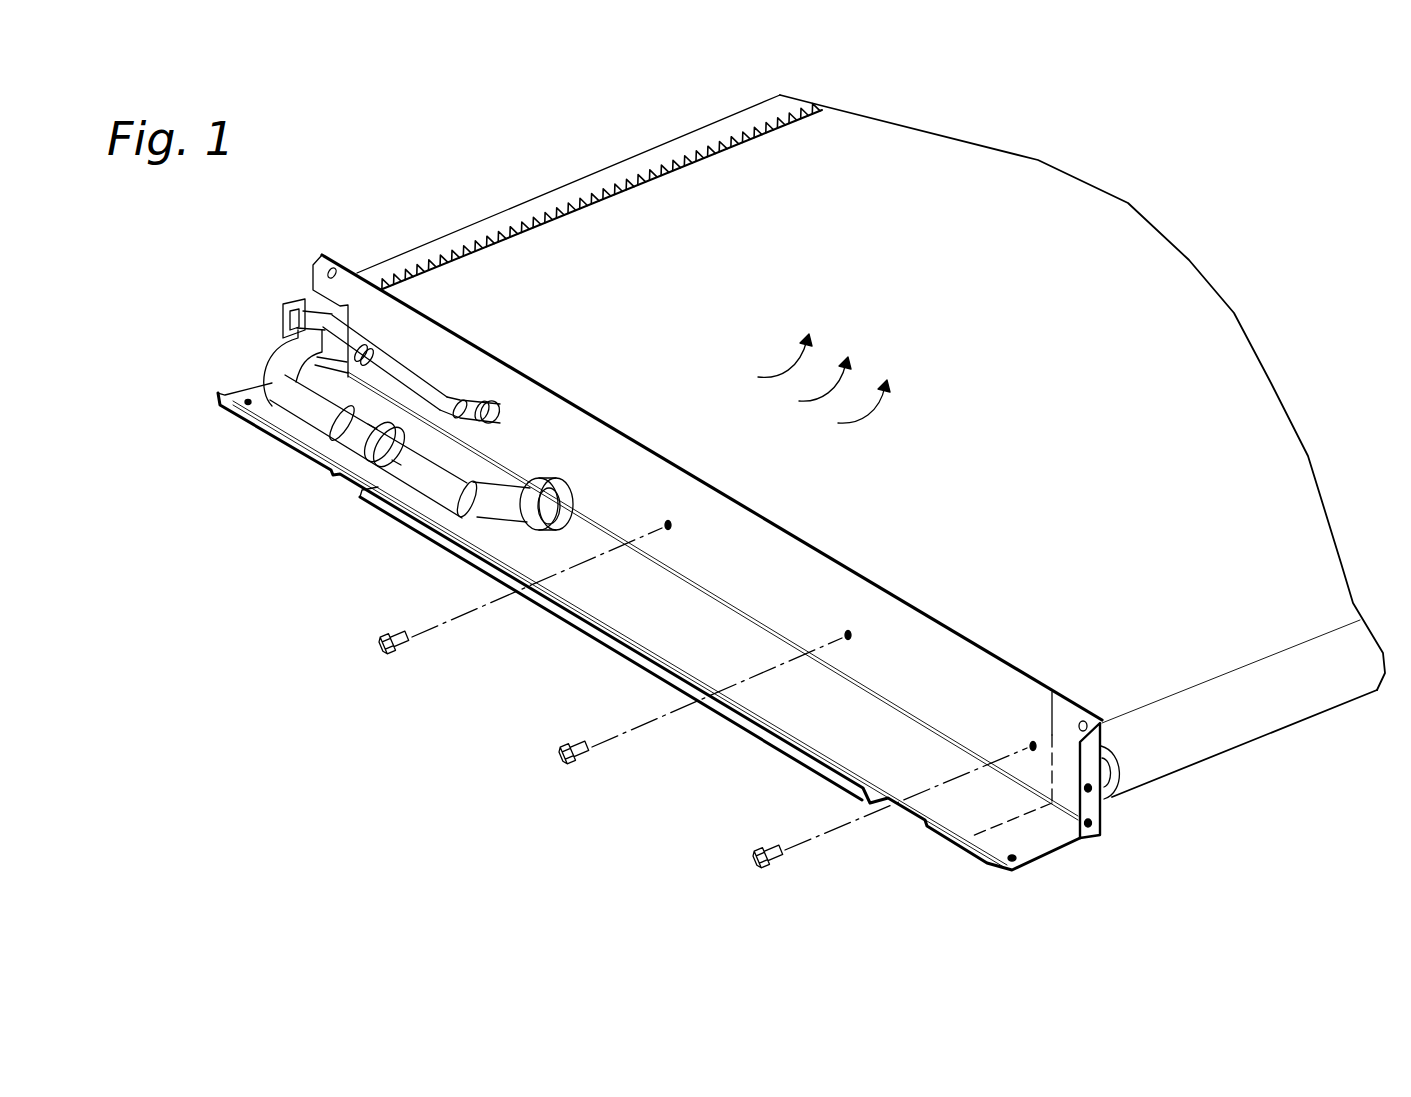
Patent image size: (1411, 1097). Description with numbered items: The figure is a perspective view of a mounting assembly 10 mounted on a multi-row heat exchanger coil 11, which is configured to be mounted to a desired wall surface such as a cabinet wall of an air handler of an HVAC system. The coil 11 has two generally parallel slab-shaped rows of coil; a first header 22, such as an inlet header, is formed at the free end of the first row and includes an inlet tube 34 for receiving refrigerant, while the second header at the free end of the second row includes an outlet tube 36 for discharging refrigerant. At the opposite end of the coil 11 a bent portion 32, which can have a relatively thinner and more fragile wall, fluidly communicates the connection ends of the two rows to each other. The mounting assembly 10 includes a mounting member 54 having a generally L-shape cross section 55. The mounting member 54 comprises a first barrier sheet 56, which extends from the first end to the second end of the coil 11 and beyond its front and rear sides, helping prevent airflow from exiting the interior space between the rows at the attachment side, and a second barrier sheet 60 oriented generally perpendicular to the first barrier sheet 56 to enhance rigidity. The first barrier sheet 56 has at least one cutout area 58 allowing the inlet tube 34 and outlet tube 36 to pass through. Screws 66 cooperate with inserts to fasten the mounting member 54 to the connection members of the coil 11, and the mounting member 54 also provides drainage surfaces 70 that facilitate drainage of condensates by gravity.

The mounting assembly 10 is at (196, 497).
The multi-row heat exchanger coil 11 is at (1173, 170).
The first header 22 is at (473, 218).
The bent portion 32 is at (1198, 742).
The inlet tube 34 is at (424, 380).
The outlet tube 36 is at (413, 485).
The mounting member 54 is at (687, 714).
The L-shape cross section 55 is at (972, 832).
The first barrier sheet 56 is at (1095, 803).
The cutout area 58 is at (325, 340).
The second barrier sheet 60 is at (1040, 860).
The screw 66 is at (765, 866).
The drainage surfaces 70 is at (738, 570).